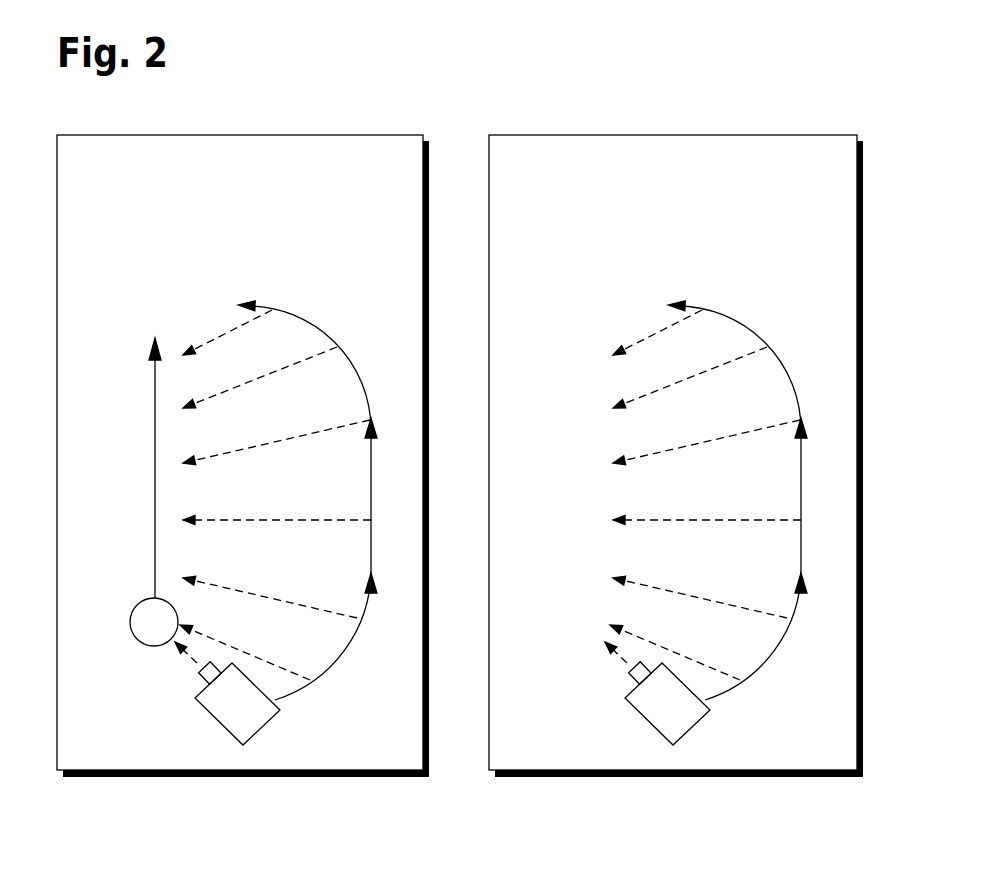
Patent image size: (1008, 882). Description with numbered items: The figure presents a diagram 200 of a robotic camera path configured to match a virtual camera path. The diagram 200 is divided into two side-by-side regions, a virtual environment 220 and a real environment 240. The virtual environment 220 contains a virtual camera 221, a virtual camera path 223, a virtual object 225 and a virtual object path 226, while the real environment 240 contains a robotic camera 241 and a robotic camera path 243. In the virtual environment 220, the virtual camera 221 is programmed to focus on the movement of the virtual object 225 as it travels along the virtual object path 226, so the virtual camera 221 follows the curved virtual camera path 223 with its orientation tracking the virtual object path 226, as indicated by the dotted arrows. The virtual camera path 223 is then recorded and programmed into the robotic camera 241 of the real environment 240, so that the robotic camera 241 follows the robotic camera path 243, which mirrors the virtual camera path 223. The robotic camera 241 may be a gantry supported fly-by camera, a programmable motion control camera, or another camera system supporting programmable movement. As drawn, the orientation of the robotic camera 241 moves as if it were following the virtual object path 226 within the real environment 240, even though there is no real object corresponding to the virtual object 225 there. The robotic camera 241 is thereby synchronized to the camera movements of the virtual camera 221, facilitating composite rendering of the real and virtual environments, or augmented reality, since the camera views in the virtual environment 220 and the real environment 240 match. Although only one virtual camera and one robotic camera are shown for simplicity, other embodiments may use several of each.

The diagram 200 is at (780, 96).
The virtual environment 220 is at (357, 166).
The virtual camera 221 is at (246, 755).
The virtual camera path 223 is at (338, 270).
The virtual object 225 is at (125, 665).
The virtual object path 226 is at (155, 455).
The real environment 240 is at (782, 166).
The robotic camera 241 is at (673, 755).
The robotic camera path 243 is at (698, 470).